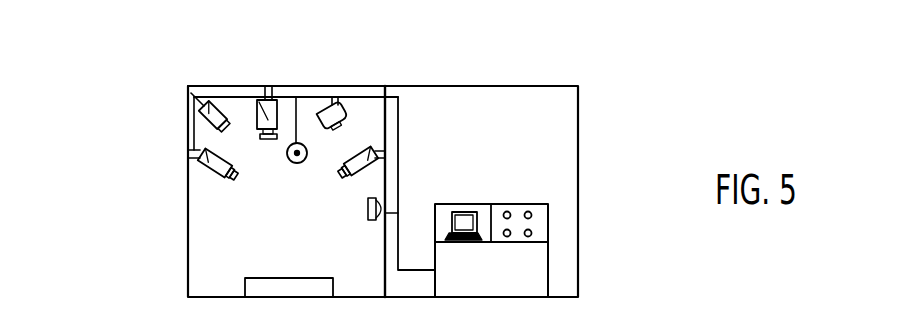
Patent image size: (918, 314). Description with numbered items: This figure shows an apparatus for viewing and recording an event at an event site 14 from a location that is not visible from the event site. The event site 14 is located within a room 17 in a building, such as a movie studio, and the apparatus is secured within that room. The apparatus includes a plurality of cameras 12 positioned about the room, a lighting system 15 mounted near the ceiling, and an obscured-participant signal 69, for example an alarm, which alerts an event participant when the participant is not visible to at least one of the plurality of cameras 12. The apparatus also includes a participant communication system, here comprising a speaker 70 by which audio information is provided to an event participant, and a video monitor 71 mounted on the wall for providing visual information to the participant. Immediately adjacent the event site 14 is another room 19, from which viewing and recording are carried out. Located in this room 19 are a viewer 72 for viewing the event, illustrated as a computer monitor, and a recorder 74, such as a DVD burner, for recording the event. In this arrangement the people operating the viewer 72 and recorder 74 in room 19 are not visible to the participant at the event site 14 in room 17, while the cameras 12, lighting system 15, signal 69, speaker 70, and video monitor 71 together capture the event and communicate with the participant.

The cameras 12 is at (255, 97).
The event site 14 is at (270, 283).
The lighting system 15 is at (202, 101).
The room 17 is at (238, 207).
The room 19 is at (584, 162).
The obscured-participant signal 69 is at (296, 164).
The speaker 70 is at (320, 97).
The video monitor 71 is at (373, 223).
The viewer 72 is at (463, 218).
The recorder 74 is at (518, 216).